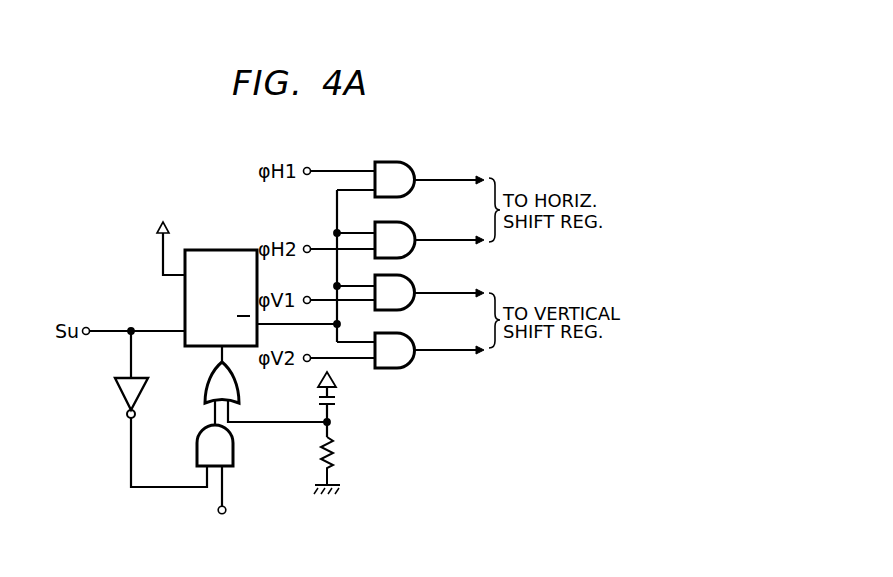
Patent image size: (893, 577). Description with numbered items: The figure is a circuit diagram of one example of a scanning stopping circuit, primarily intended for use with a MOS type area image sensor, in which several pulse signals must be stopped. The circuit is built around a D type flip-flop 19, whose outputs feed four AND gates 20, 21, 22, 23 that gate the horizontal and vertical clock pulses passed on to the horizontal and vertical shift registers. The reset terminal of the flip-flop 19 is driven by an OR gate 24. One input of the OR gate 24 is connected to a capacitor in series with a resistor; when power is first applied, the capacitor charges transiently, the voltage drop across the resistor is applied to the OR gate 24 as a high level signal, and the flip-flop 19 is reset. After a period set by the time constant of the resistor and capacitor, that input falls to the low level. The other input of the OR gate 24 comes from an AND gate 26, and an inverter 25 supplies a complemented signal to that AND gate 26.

The D type flip-flop 19 is at (218, 250).
The AND gate 20 is at (405, 163).
The AND gate 21 is at (405, 224).
The AND gate 22 is at (405, 277).
The AND gate 23 is at (405, 335).
The OR gate 24 is at (242, 389).
The inverter 25 is at (143, 389).
The AND gate 26 is at (235, 446).